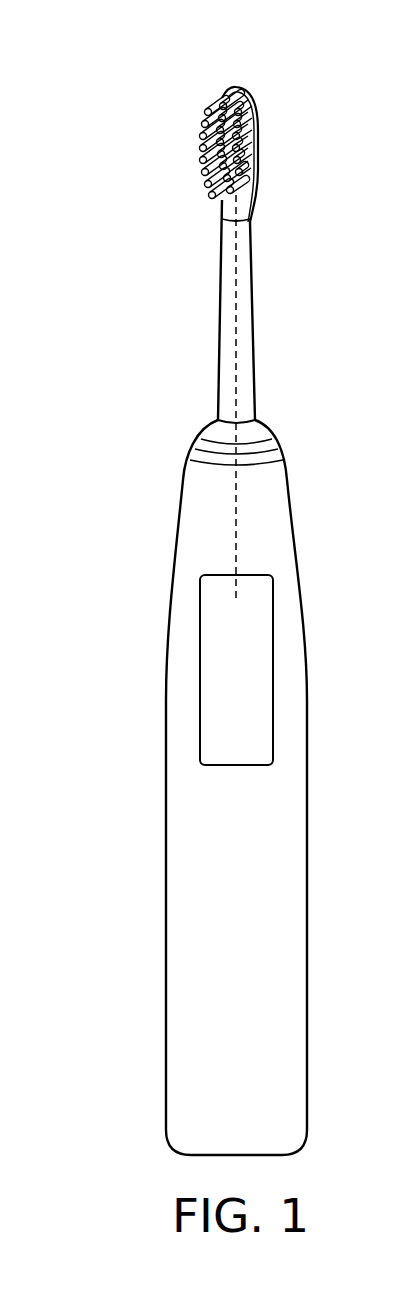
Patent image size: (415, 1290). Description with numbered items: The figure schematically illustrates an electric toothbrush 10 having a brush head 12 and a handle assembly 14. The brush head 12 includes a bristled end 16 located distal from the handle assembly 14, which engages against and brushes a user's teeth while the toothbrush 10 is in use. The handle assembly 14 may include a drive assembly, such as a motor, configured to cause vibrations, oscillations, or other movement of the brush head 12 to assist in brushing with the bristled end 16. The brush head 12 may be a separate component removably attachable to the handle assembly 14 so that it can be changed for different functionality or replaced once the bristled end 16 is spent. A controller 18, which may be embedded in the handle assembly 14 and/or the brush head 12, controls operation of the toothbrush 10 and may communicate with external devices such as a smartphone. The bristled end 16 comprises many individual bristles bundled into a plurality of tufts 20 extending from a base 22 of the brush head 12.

The electric toothbrush 10 is at (107, 95).
The brush head 12 is at (253, 320).
The handle assembly 14 is at (290, 967).
The bristled end 16 is at (232, 131).
The controller 18 is at (273, 693).
The tufts 20 is at (206, 112).
The base 22 is at (255, 158).